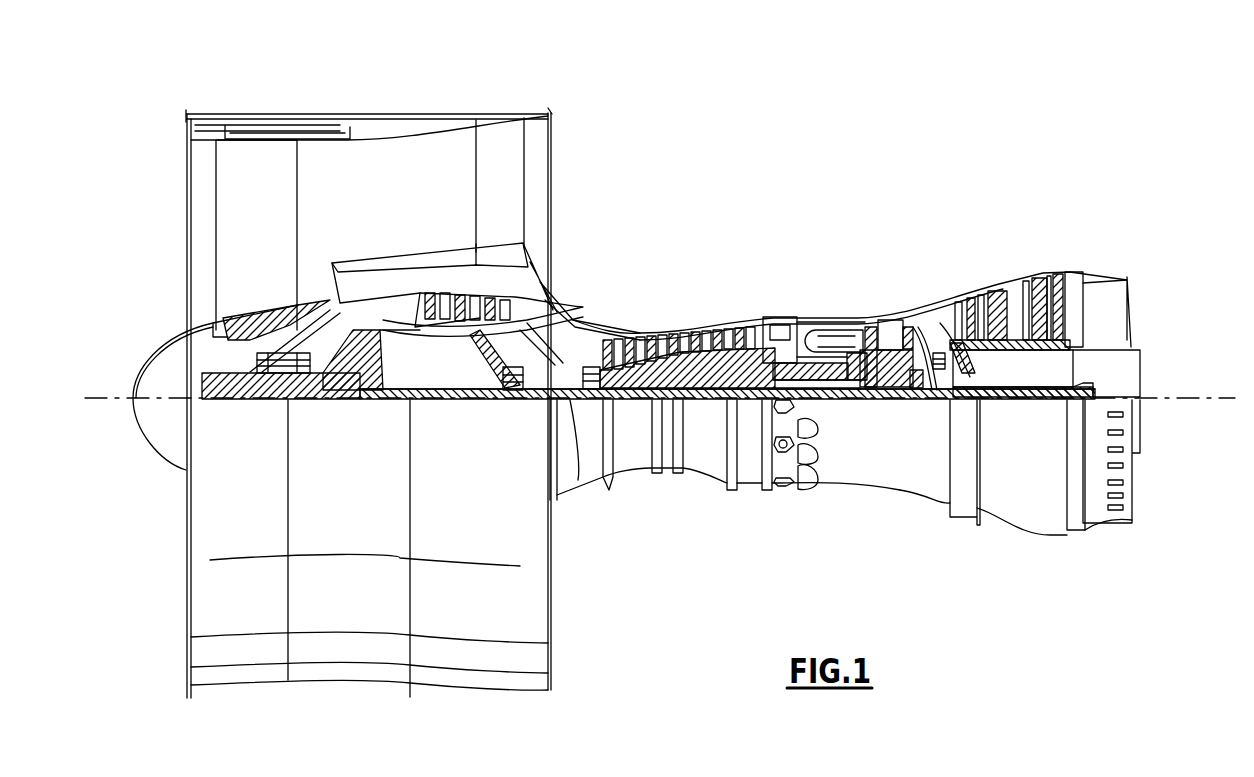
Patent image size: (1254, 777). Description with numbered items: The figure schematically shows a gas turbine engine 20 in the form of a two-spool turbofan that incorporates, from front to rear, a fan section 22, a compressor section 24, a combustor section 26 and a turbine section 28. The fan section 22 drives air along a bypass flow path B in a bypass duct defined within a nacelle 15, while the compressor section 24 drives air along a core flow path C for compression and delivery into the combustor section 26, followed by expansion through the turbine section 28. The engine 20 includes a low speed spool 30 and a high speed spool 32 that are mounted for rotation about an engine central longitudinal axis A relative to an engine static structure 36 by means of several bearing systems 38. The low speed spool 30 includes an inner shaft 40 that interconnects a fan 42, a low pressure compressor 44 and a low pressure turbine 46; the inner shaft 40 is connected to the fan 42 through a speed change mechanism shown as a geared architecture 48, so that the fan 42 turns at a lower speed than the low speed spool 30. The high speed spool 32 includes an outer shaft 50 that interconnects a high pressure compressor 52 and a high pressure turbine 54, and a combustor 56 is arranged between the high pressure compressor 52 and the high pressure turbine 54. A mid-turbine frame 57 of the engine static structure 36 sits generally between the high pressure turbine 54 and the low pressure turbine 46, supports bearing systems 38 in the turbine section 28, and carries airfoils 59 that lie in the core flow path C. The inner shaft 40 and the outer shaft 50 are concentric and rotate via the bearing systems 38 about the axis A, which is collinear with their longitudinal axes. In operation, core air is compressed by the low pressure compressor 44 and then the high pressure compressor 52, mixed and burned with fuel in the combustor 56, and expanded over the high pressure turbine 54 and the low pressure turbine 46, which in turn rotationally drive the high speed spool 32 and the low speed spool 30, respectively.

The nacelle 15 is at (369, 118).
The gas turbine engine 20 is at (827, 168).
The fan section 22 is at (297, 108).
The compressor section 24 is at (597, 306).
The combustor section 26 is at (822, 302).
The turbine section 28 is at (968, 258).
The low speed spool 30 is at (707, 400).
The high speed spool 32 is at (750, 345).
The engine static structure 36 is at (748, 487).
The bearing systems 38 is at (505, 392).
The inner shaft 40 is at (570, 403).
The fan 42 is at (272, 244).
The low pressure compressor 44 is at (478, 300).
The low pressure turbine 46 is at (1017, 290).
The geared architecture 48 is at (375, 385).
The outer shaft 50 is at (822, 382).
The high pressure compressor 52 is at (666, 358).
The high pressure turbine 54 is at (887, 327).
The combustor 56 is at (822, 340).
The mid-turbine frame 57 is at (932, 306).
The airfoils 59 is at (948, 336).
The engine central longitudinal axis A is at (1221, 398).
The bypass flow path B is at (335, 190).
The core flow path C is at (377, 299).